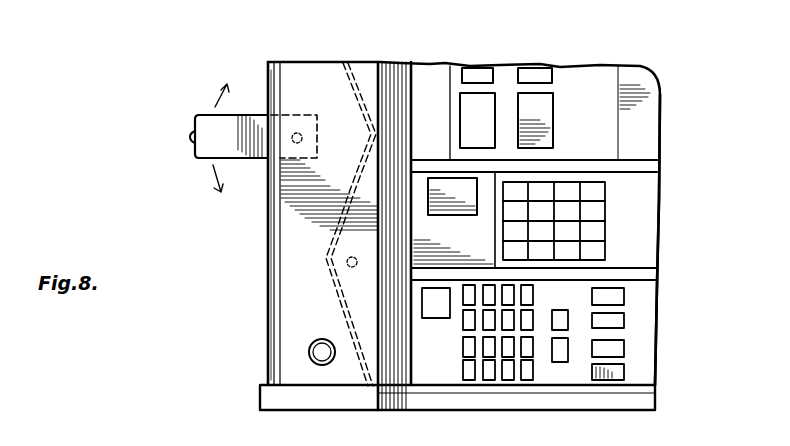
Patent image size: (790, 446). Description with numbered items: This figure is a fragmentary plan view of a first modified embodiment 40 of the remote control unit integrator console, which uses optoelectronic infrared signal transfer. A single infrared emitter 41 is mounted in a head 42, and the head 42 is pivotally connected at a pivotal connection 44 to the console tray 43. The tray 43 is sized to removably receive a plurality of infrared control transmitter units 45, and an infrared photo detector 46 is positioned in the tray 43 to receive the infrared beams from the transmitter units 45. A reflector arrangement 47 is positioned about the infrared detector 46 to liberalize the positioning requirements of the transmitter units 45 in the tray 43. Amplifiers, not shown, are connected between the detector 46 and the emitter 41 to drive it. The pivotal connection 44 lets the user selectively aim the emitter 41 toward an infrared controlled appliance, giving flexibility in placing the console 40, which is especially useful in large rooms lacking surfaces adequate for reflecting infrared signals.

The first modified embodiment of the remote control unit integrator console 40 is at (154, 67).
The infrared emitter 41 is at (193, 138).
The head 42 is at (195, 114).
The console tray 43 is at (502, 410).
The pivotal connection 44 is at (299, 133).
The infrared control transmitter units 45 is at (645, 150).
The infrared photo detector 46 is at (346, 260).
The reflector arrangement 47 is at (353, 178).